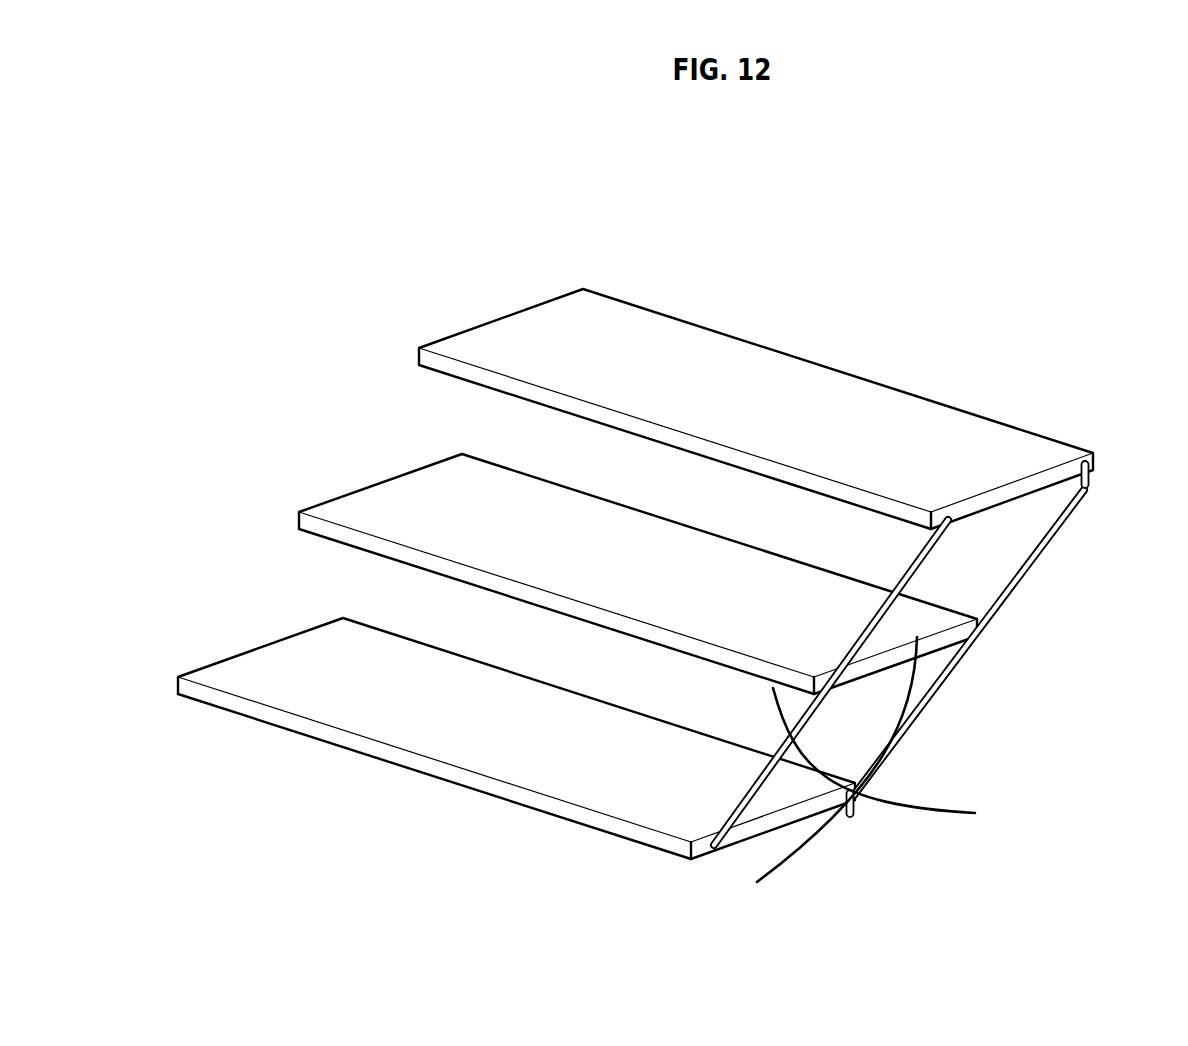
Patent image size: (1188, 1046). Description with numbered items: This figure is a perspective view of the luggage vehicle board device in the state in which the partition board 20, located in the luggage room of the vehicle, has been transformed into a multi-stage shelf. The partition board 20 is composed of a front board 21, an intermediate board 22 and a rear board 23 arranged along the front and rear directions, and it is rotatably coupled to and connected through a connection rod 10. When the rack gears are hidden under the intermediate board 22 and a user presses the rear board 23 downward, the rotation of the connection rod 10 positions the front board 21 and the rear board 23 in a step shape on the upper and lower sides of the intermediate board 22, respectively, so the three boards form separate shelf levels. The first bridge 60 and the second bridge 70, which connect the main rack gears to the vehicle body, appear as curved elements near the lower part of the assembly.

The connection rod 10 is at (913, 573).
The partition board 20 is at (635, 551).
The front board 21 is at (690, 340).
The intermediate board 22 is at (372, 507).
The rear board 23 is at (252, 672).
The first bridge 60 is at (790, 863).
The second bridge 70 is at (917, 815).